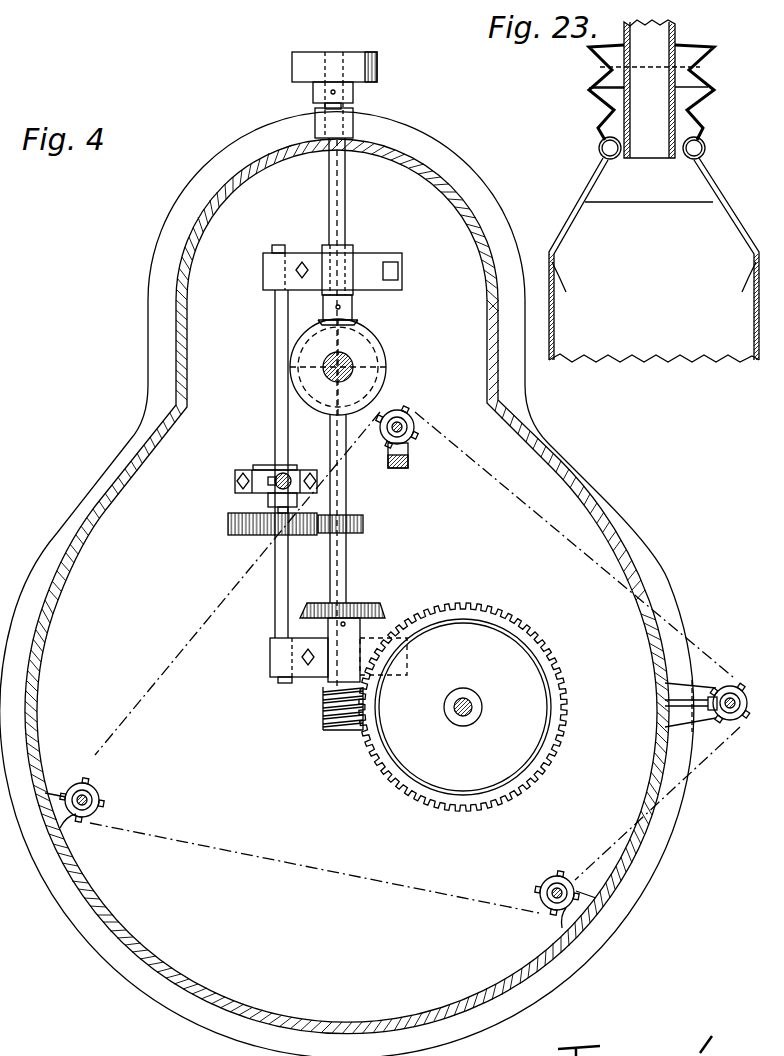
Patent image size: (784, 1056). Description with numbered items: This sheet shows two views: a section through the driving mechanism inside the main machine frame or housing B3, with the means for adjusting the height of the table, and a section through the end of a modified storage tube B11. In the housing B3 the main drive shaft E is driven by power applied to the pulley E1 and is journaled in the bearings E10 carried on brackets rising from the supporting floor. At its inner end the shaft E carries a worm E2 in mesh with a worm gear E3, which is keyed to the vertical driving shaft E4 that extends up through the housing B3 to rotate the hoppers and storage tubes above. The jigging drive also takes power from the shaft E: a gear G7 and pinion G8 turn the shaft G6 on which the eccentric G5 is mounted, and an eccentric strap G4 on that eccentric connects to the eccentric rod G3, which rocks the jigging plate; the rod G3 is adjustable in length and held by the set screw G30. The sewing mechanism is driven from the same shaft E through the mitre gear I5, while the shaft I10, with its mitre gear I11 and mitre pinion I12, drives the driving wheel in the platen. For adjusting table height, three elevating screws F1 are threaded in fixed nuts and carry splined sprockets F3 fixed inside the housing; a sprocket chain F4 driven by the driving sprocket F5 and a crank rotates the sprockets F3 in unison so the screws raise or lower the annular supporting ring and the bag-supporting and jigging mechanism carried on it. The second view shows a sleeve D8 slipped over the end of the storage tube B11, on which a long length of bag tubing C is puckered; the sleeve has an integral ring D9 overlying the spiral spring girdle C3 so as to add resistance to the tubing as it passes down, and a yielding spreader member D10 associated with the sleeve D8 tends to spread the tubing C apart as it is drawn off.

In FIG. 4, the main machine frame or housing B3 is at (70, 516).
In FIG. 4, the pulley E1 is at (292, 65).
In FIG. 4, the main drive shaft E is at (329, 200).
In FIG. 4, the bearings E10 is at (354, 256).
In FIG. 4, the mitre pinion I12 is at (360, 317).
In FIG. 4, the mitre gear I11 is at (386, 360).
In FIG. 4, the shaft I10 is at (330, 366).
In FIG. 4, the shaft G6 is at (275, 390).
In FIG. 4, the eccentric strap G4 is at (243, 474).
In FIG. 4, the eccentric G5 is at (262, 465).
In FIG. 4, the eccentric rod G3 is at (289, 477).
In FIG. 4, the set screw G30 is at (268, 488).
In FIG. 4, the gear G7 is at (228, 526).
In FIG. 4, the pinion G8 is at (363, 524).
In FIG. 4, the mitre gear I5 is at (385, 608).
In FIG. 4, the worm E2 is at (326, 708).
In FIG. 4, the worm gear E3 is at (552, 656).
In FIG. 4, the vertical driving shaft E4 is at (468, 712).
In FIG. 4, the elevating screws F1 is at (403, 420).
In FIG. 4, the sprockets F3 is at (406, 462).
In FIG. 4, the driving sprocket F5 is at (730, 726).
In FIG. 4, the sprocket chain F4 is at (555, 530).
In FIG. 23, the storage tube B11 is at (665, 30).
In FIG. 23, the bag tubing C is at (712, 88).
In FIG. 23, the sleeve D8 is at (610, 88).
In FIG. 23, the ring D9 is at (600, 136).
In FIG. 23, the spiral spring girdle C3 is at (705, 142).
In FIG. 23, the yielding spreader member D10 is at (756, 266).